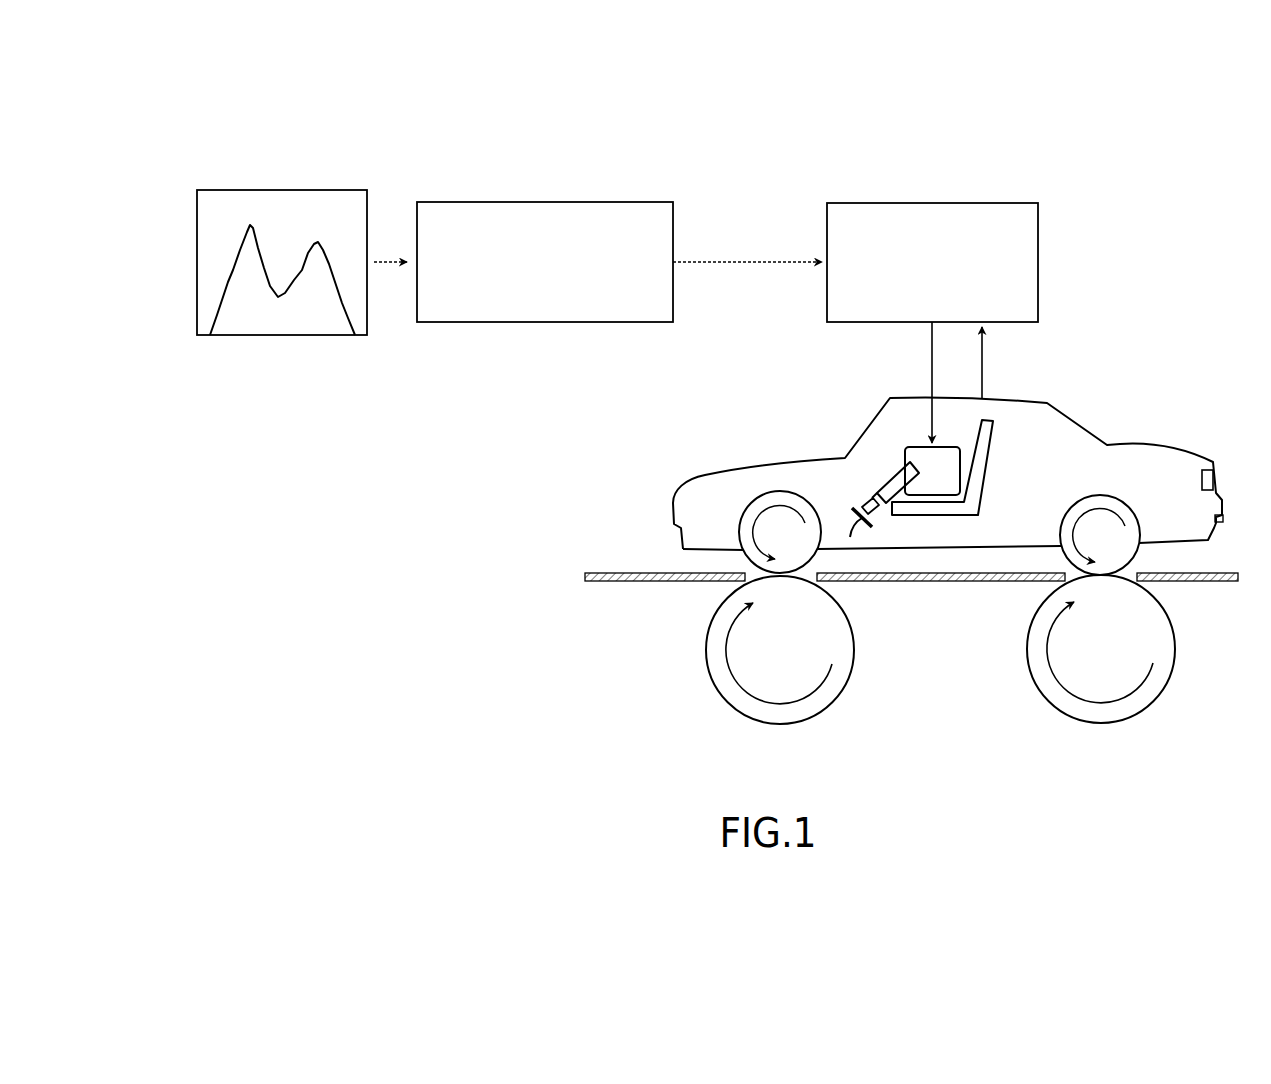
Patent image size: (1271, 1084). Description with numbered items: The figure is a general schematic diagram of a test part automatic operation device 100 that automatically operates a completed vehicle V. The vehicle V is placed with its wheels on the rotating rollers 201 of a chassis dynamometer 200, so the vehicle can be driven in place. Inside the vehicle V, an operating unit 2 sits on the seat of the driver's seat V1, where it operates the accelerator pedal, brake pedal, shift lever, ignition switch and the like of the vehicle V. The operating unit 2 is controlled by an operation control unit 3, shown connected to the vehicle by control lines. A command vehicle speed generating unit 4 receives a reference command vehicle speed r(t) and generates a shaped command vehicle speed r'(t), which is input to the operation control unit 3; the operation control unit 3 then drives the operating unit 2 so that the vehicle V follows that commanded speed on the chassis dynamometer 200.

The test part automatic operation device 100 is at (630, 100).
The command vehicle speed generating unit 4 is at (566, 202).
The operation control unit 3 is at (932, 203).
The operating unit 2 is at (893, 470).
The vehicle V is at (722, 470).
The driver's seat V1 is at (988, 465).
The rotating rollers 201 is at (706, 648).
The chassis dynamometer 200 is at (683, 698).